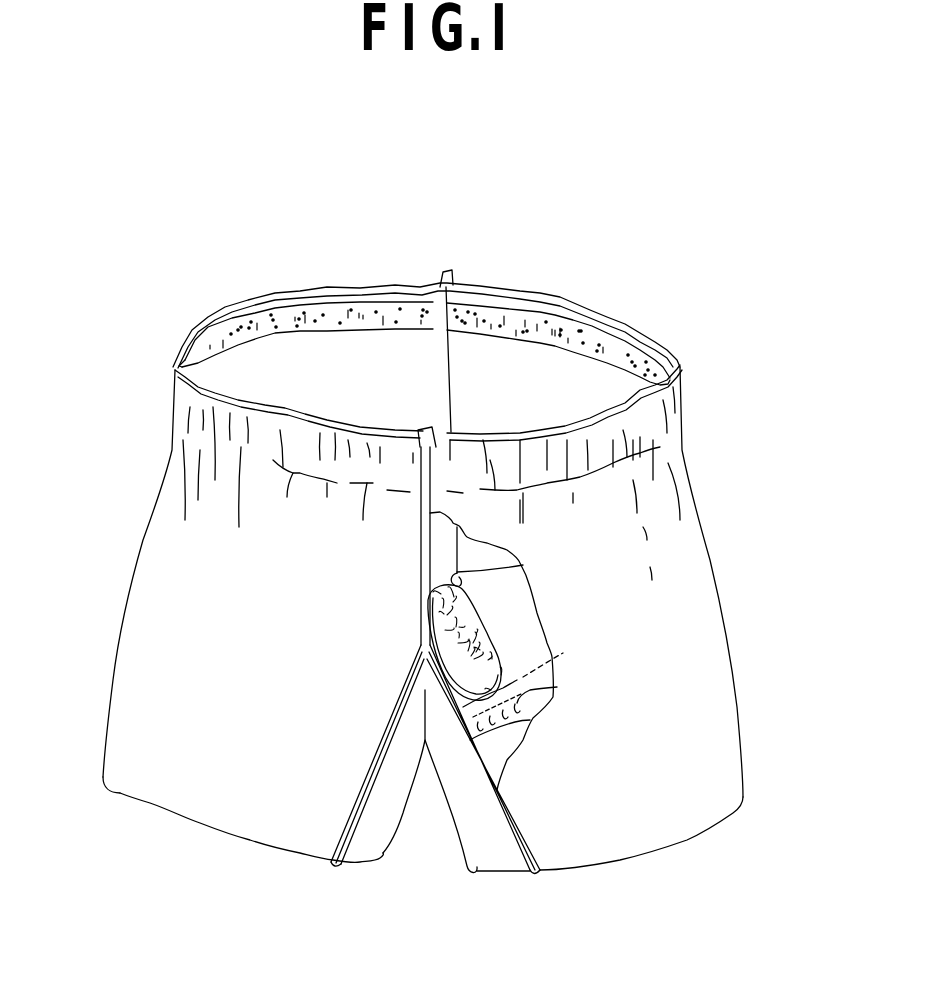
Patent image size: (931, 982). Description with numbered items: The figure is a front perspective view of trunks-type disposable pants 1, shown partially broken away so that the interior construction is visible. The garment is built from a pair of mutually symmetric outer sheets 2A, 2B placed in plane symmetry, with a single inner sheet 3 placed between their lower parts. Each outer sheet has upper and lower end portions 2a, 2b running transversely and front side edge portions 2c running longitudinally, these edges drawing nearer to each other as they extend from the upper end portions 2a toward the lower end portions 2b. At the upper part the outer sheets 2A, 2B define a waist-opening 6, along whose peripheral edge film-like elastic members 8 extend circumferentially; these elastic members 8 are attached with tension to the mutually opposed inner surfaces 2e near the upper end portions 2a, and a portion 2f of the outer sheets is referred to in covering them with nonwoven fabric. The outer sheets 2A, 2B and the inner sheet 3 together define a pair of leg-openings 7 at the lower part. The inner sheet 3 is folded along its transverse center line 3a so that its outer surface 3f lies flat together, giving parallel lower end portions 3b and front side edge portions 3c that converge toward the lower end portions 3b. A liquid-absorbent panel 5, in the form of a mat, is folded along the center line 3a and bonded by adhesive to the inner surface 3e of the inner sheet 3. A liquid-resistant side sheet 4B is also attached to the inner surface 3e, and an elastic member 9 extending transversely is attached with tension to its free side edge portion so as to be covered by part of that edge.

The disposable pants 1 is at (674, 276).
The outer sheet 2A is at (165, 537).
The outer sheet 2B is at (695, 568).
The upper end portion 2a is at (212, 311).
The lower end portion 2b is at (160, 810).
The front side edge portion 2c is at (375, 773).
The inner surface 2e is at (270, 362).
The outer sheet surface portion 2f is at (145, 680).
The inner sheet 3 is at (465, 830).
The transverse center line 3a is at (523, 565).
The lower end portion 3b is at (357, 863).
The front side edge portion 3c is at (360, 808).
The inner surface 3e is at (510, 747).
The outer surface 3f is at (400, 803).
The side sheet 4B is at (557, 687).
The liquid-absorbent panel 5 is at (480, 627).
The waist-opening 6 is at (433, 347).
The leg-opening 7 is at (243, 843).
The elastic member 8 is at (348, 313).
The elastic member 9 is at (563, 653).